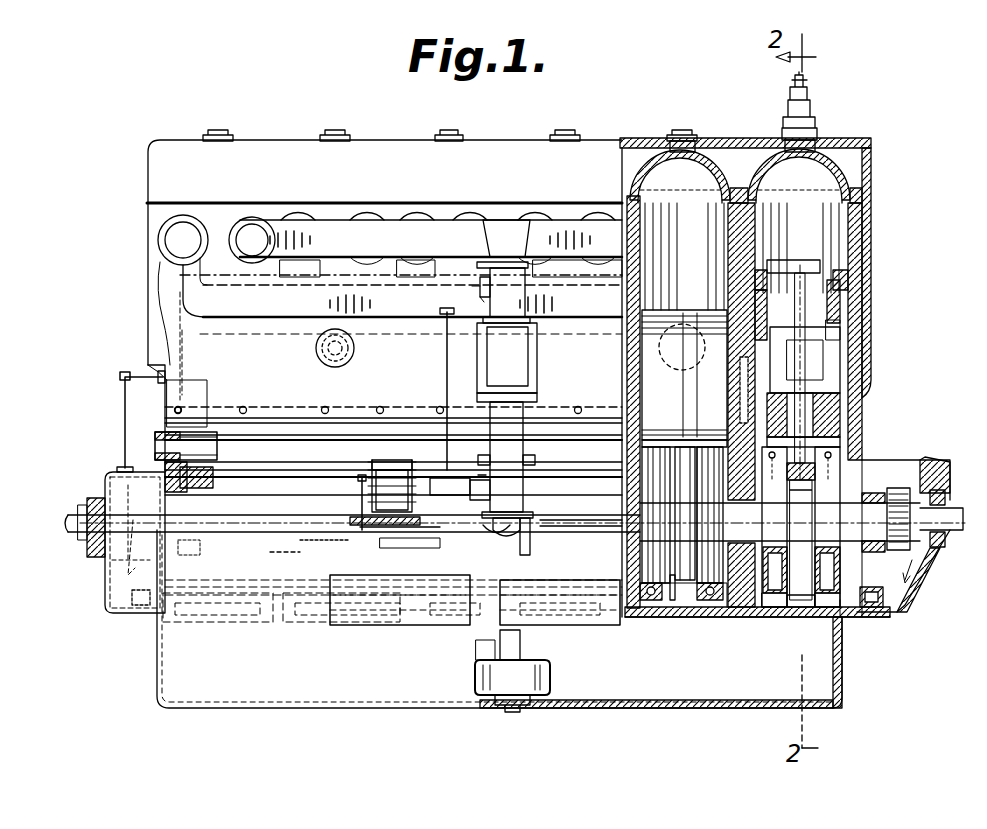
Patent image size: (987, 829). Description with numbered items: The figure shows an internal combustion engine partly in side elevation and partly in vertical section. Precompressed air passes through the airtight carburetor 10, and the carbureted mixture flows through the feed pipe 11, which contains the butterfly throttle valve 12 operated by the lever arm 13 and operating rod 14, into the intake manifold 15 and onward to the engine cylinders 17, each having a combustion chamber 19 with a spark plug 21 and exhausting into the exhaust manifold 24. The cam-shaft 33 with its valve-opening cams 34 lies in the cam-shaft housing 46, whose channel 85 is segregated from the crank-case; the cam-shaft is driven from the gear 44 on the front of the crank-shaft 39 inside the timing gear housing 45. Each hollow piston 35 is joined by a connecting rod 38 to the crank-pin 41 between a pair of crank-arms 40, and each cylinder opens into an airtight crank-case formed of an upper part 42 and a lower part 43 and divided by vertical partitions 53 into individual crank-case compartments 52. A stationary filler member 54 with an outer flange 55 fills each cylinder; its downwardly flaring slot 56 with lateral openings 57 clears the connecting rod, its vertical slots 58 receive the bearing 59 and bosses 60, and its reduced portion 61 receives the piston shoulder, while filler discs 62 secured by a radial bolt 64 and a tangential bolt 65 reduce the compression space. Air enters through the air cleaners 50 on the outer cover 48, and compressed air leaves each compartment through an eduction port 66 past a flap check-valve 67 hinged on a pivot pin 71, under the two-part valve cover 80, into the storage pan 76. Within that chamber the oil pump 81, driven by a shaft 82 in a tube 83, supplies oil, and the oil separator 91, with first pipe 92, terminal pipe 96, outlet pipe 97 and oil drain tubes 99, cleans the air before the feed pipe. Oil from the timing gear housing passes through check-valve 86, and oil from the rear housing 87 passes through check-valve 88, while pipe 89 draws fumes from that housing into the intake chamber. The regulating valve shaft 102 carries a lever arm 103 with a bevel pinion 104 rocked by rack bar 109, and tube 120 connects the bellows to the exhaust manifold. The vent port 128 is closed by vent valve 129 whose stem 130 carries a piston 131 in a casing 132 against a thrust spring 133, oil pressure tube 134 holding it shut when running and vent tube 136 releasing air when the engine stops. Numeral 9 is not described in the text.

The control lever 9 is at (462, 462).
The carburetor 10 is at (507, 359).
The feed pipe 11 is at (512, 232).
The butterfly throttle valve 12 is at (507, 469).
The lever arm 13 is at (480, 292).
The operating rod 14 is at (488, 276).
The intake manifold 15 is at (576, 238).
The engine cylinder 17 is at (735, 280).
The combustion chamber 19 is at (740, 176).
The spark plug 21 is at (222, 130).
The exhaust manifold 24 is at (398, 310).
The cam-shaft 33 is at (155, 448).
The valve-opening cam 34 is at (220, 443).
The piston 35 is at (858, 232).
The connecting rod 38 is at (812, 374).
The crank-shaft 39 is at (80, 540).
The crank-arm 40 is at (820, 505).
The crank-pin 41 is at (850, 450).
The upper crank-case part 42 is at (850, 465).
The lower crank-case part 43 is at (810, 617).
The gear 44 is at (898, 488).
The timing gear housing 45 is at (905, 605).
The cam-shaft housing 46 is at (282, 465).
The outer cover 48 is at (190, 331).
The air cleaner 50 is at (316, 348).
The crank-case compartment 52 is at (692, 610).
The vertical partition 53 is at (628, 500).
The filler member 54 is at (790, 398).
The outer flange 55 is at (735, 428).
The downwardly flaring slot 56 is at (810, 340).
The lateral opening 57 is at (856, 420).
The vertical slot 58 is at (848, 362).
The bearing 59 is at (800, 272).
The boss 60 is at (780, 280).
The reduced diameter portion 61 is at (775, 313).
The filler disc 62 is at (690, 572).
The fillister-headed bolt 64 is at (780, 612).
The fillister-headed bolt 65 is at (770, 520).
The eduction port 66 is at (408, 612).
The check-valve 67 is at (178, 618).
The pivot pin 71 is at (240, 600).
The pan 76 is at (380, 705).
The valve cover 80 is at (368, 625).
The oil pump 81 is at (512, 686).
The shaft 82 is at (520, 640).
The tube 83 is at (545, 665).
The channel 85 is at (205, 480).
The check-valve 86 is at (896, 612).
The rear housing 87 is at (105, 592).
The check-valve 88 is at (138, 603).
The pipe 89 is at (122, 428).
The oil separator 91 is at (292, 555).
The first pipe 92 is at (585, 528).
The terminal pipe 96 is at (400, 533).
The outlet pipe 97 is at (496, 538).
The oil drain tube 99 is at (195, 555).
The valve-operating shaft 102 is at (515, 462).
The lever arm 103 is at (506, 441).
The bevel pinion 104 is at (520, 555).
The rack bar 109 is at (482, 493).
The tube 120 is at (446, 355).
The vent port 128 is at (388, 535).
The vent valve 129 is at (372, 550).
The valve stem 130 is at (372, 505).
The piston 131 is at (392, 470).
The casing 132 is at (372, 478).
The thrust spring 133 is at (412, 475).
The oil pressure tube 134 is at (360, 492).
The vent tube 136 is at (440, 480).